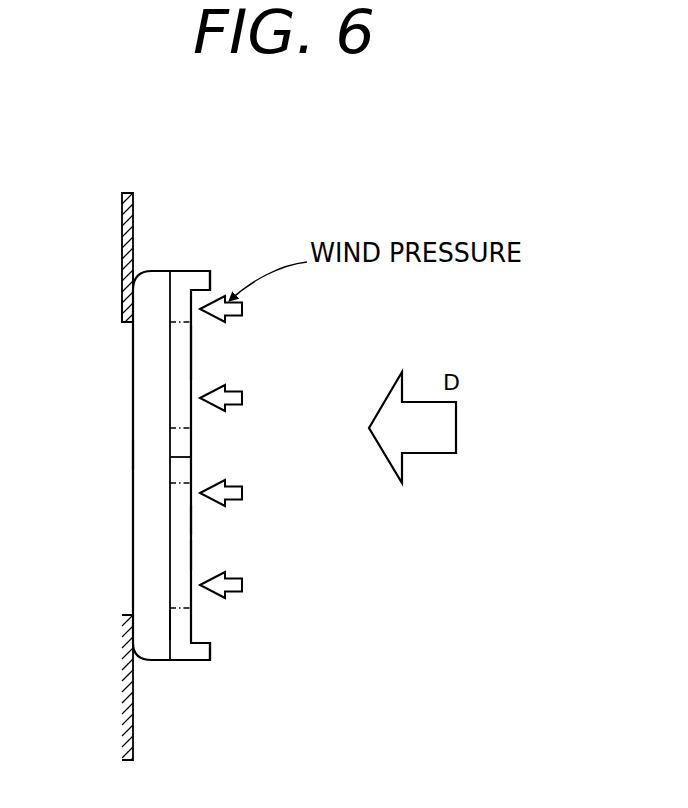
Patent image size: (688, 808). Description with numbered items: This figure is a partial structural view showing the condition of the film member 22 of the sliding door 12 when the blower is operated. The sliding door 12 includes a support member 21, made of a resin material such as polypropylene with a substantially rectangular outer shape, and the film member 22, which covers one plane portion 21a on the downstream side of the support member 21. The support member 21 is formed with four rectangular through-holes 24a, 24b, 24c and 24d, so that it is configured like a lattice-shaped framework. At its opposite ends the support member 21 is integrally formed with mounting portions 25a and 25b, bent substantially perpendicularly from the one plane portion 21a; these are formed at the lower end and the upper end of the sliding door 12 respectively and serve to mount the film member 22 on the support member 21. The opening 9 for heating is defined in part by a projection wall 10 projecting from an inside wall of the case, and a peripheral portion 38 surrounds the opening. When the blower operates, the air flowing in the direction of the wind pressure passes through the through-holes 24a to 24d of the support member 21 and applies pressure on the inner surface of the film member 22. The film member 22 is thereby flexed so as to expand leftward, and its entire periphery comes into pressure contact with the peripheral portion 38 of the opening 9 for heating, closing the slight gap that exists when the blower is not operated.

The opening for heating 9 is at (122, 322).
The projection wall 10 is at (125, 193).
The sliding door 12 is at (223, 261).
The support member 21 is at (186, 628).
The one plane portion 21a is at (192, 457).
The film member 22 is at (133, 455).
The through-hole 24a is at (192, 555).
The through-hole 24b is at (192, 367).
The through-hole 24c is at (192, 341).
The through-hole 24d is at (192, 520).
The mounting portion 25a is at (210, 652).
The mounting portion 25b is at (200, 271).
The peripheral portion 38 is at (134, 270).